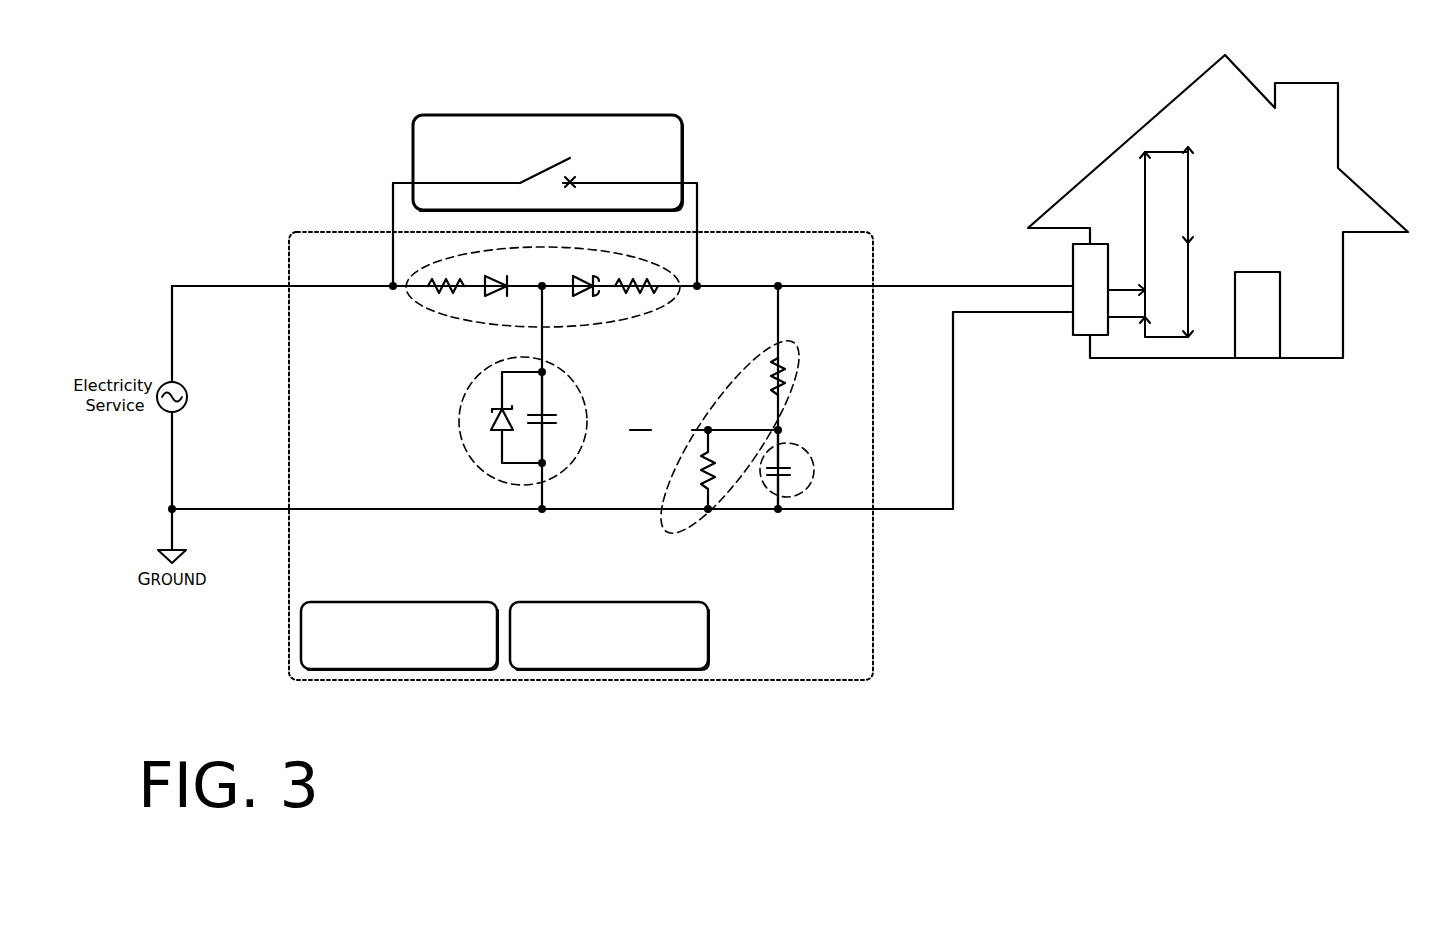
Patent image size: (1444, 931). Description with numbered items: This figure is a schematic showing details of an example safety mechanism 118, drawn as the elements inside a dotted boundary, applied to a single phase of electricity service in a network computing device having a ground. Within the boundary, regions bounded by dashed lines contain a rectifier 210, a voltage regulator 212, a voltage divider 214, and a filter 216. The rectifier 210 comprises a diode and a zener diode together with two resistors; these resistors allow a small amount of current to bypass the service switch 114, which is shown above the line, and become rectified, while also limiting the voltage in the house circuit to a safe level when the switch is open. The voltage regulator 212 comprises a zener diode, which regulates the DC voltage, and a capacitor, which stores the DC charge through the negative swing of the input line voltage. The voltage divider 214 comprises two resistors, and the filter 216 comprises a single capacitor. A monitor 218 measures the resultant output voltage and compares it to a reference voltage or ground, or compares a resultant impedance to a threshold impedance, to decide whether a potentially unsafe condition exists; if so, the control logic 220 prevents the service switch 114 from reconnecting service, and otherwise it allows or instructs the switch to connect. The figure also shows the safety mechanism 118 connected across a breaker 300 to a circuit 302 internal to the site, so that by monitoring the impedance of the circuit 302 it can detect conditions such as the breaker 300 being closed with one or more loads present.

The service switch 114 is at (548, 163).
The safety mechanism 118 is at (582, 680).
The rectifier 210 is at (440, 317).
The voltage regulator 212 is at (458, 438).
The voltage divider 214 is at (670, 533).
The filter 216 is at (795, 497).
The monitor 218 is at (609, 636).
The control logic 220 is at (399, 636).
The breaker 300 is at (1072, 335).
The circuit 302 is at (1188, 202).